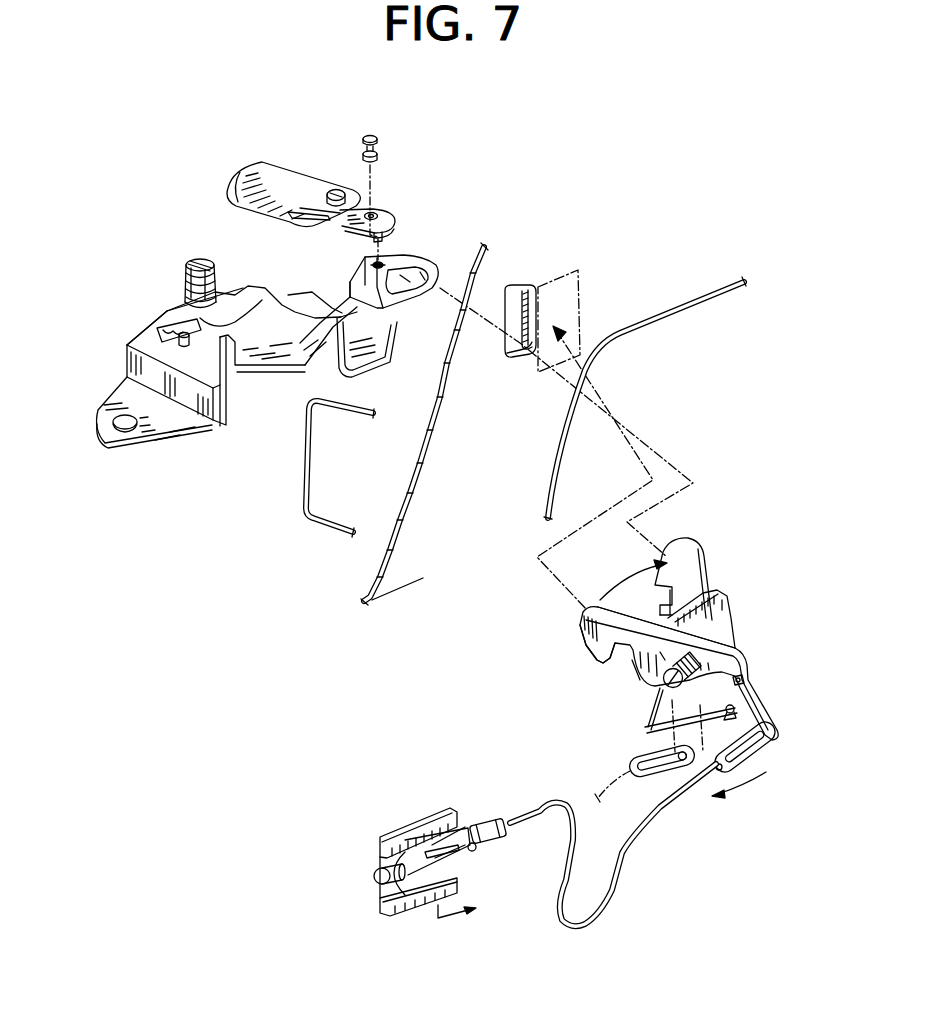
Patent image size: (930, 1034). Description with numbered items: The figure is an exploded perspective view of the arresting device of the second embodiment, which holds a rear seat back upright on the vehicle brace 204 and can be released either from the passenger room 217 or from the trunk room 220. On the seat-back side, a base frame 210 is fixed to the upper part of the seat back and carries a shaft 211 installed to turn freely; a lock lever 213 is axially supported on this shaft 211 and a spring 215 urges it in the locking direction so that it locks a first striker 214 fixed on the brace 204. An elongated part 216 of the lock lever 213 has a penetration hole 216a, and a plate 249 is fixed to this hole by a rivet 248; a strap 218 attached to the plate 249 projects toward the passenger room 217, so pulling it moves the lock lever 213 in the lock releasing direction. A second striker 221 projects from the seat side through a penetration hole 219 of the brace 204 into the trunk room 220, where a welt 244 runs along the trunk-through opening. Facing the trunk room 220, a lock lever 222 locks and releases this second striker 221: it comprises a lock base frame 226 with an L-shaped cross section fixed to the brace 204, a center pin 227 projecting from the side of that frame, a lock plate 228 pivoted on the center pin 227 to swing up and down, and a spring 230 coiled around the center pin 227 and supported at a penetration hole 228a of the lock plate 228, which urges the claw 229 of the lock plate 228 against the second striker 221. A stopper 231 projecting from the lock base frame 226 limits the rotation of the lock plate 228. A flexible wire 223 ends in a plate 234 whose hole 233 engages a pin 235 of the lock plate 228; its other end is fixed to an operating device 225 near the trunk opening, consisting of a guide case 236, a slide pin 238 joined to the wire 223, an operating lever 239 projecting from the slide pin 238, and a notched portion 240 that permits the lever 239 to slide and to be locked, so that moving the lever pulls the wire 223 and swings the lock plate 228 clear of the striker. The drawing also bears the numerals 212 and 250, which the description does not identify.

The brace 204 is at (552, 440).
The base frame 210 is at (125, 362).
The shaft 211 is at (212, 260).
The mounting ear 212 is at (230, 352).
The lock lever 213 is at (272, 366).
The first striker 214 is at (304, 508).
The spring 215 is at (183, 280).
The elongated part 216 is at (395, 256).
The penetration hole 216a is at (372, 265).
The passenger room 217 is at (164, 164).
The strap 218 is at (316, 168).
The penetration hole 219 is at (527, 281).
The trunk room 220 is at (746, 491).
The second striker 221 is at (403, 314).
The lock lever 222 is at (739, 642).
The flexible wire 223 is at (646, 830).
The operating device 225 is at (473, 816).
The lock base frame 226 is at (719, 600).
The center pin 227 is at (667, 680).
The lock plate 228 is at (582, 635).
The penetration hole 228a is at (736, 710).
The claw 229 is at (598, 647).
The spring 230 is at (655, 713).
The stopper 231 is at (746, 680).
The hole 233 is at (753, 770).
The plate 234 is at (762, 752).
The pin 235 is at (768, 733).
The guide case 236 is at (407, 826).
The slide pin 238 is at (377, 884).
The operating lever 239 is at (476, 852).
The notched portion 240 is at (433, 892).
The welt 244 is at (662, 318).
The rivet 248 is at (378, 139).
The plate 249 is at (388, 213).
The screw 250 is at (343, 196).